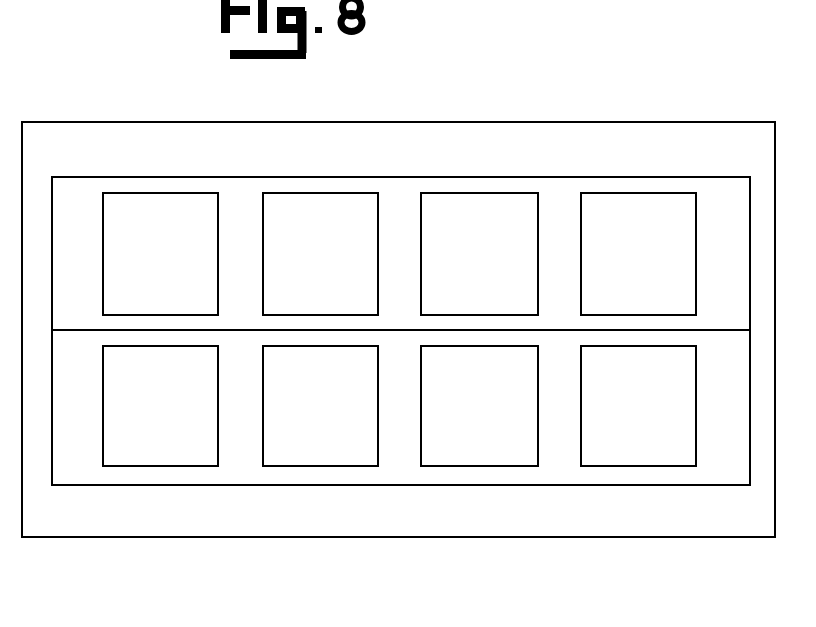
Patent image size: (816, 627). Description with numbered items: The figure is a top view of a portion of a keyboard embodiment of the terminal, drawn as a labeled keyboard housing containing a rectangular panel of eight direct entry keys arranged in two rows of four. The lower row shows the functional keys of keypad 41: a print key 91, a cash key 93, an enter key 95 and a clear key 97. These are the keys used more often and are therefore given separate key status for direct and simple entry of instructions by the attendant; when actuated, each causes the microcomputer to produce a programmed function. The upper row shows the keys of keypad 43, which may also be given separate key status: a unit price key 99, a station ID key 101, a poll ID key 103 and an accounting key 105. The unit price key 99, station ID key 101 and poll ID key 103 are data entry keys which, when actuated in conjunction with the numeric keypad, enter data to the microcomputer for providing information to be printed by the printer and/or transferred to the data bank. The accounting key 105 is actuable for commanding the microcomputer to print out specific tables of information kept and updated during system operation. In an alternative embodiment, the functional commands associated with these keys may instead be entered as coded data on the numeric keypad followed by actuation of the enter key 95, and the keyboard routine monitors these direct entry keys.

The keypad 41 is at (247, 472).
The keypad 43 is at (440, 190).
The print key 91 is at (103, 448).
The cash key 93 is at (262, 428).
The enter key 95 is at (421, 428).
The clear key 97 is at (697, 448).
The unit price key 99 is at (219, 240).
The station ID key 101 is at (379, 232).
The poll ID key 103 is at (539, 222).
The accounting key 105 is at (697, 206).